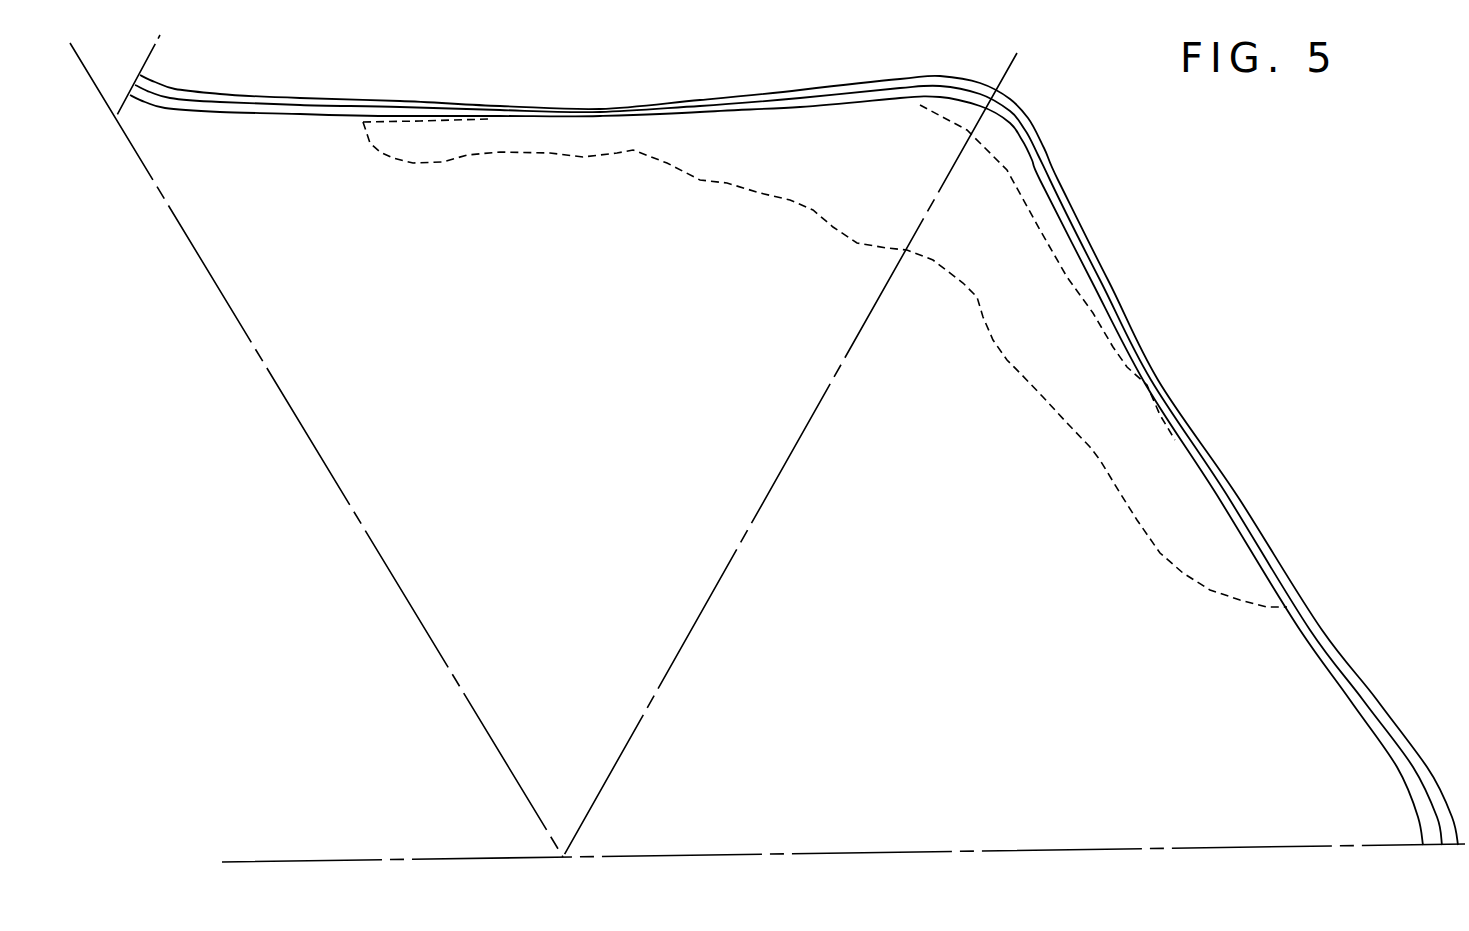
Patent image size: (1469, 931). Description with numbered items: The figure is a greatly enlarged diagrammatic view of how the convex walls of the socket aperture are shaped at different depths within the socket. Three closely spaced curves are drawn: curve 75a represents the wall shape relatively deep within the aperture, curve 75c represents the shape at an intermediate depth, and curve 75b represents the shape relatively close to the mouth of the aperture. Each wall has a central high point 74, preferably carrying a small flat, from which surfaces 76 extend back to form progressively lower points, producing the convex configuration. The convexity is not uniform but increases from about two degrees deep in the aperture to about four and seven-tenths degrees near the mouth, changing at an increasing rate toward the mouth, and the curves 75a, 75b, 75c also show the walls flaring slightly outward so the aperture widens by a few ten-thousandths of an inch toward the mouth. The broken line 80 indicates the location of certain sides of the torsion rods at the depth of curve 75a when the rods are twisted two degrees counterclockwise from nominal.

The central high point 74 is at (549, 117).
The curve representing wall shape deep within the aperture 75a is at (1054, 219).
The curve representing wall shape near the mouth of the aperture 75b is at (1057, 165).
The curve representing wall shape at intermediate depth 75c is at (1088, 244).
The surfaces 76 is at (240, 119).
The broken line representing rod side location 80 is at (389, 120).